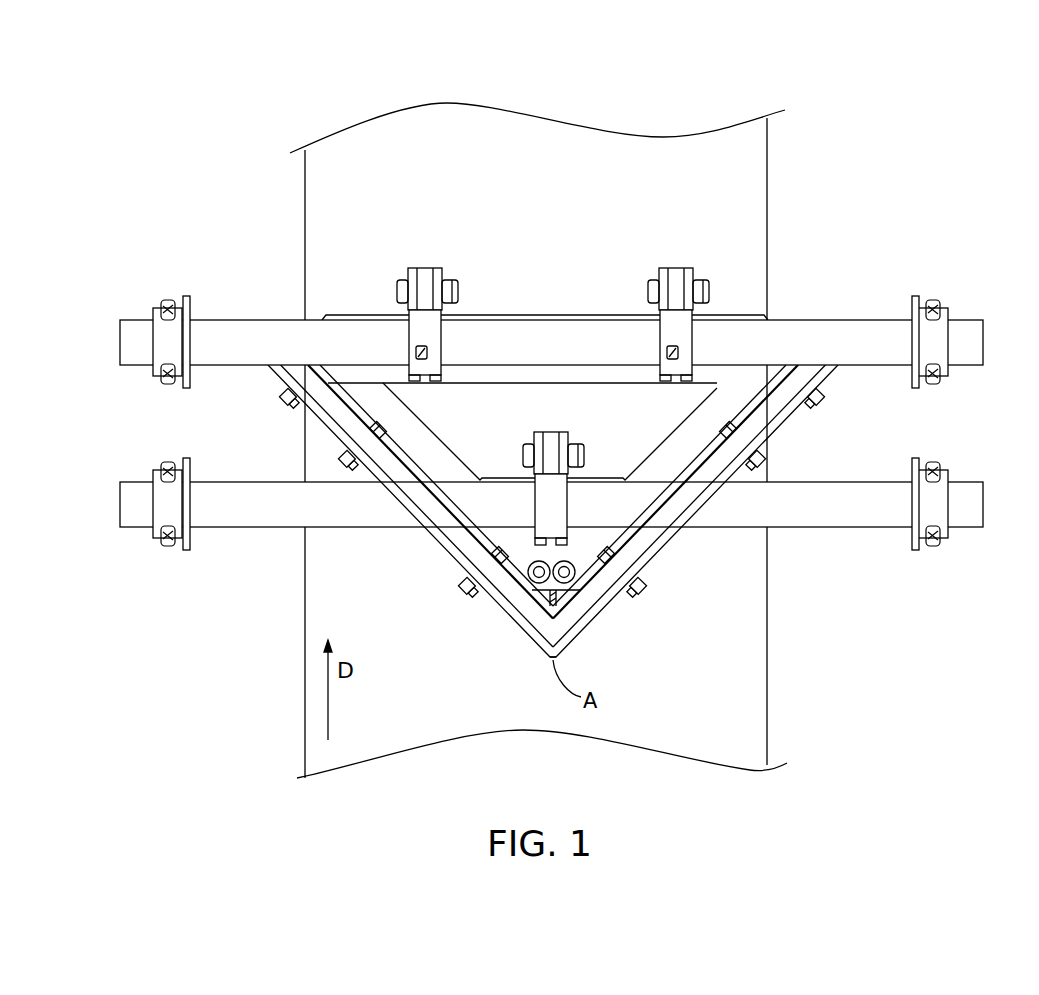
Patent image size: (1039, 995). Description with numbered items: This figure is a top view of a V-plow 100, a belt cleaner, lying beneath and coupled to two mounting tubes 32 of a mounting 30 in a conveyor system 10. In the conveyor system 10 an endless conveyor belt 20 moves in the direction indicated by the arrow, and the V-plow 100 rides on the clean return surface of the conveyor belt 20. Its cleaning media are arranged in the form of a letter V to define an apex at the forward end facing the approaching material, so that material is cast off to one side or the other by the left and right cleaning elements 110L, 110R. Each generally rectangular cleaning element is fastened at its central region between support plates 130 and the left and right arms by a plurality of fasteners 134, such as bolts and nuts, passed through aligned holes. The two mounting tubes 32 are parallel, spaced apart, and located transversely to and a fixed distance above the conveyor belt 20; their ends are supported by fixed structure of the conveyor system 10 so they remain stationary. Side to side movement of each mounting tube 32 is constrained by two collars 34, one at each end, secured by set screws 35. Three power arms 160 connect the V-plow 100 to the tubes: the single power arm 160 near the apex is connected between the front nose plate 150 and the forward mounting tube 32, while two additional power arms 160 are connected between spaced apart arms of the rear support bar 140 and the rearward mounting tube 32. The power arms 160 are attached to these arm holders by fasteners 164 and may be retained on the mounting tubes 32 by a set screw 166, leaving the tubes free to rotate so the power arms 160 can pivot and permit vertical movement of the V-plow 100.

The conveyor system 10 is at (815, 175).
The conveyor belt 20 is at (574, 172).
The mounting 30 is at (938, 630).
The mounting tube 32 is at (855, 320).
The collar 34 is at (160, 306).
The set screw 35 is at (170, 383).
The V-plow 100 is at (722, 688).
The right cleaning element 110R is at (337, 408).
The left cleaning element 110L is at (598, 590).
The support plate 130 is at (505, 613).
The fastener 134 is at (468, 592).
The rear support bar 140 is at (632, 375).
The front nose plate 150 is at (590, 538).
The power arm 160 is at (425, 277).
The fastener 164 is at (395, 292).
The set screw 166 is at (415, 358).